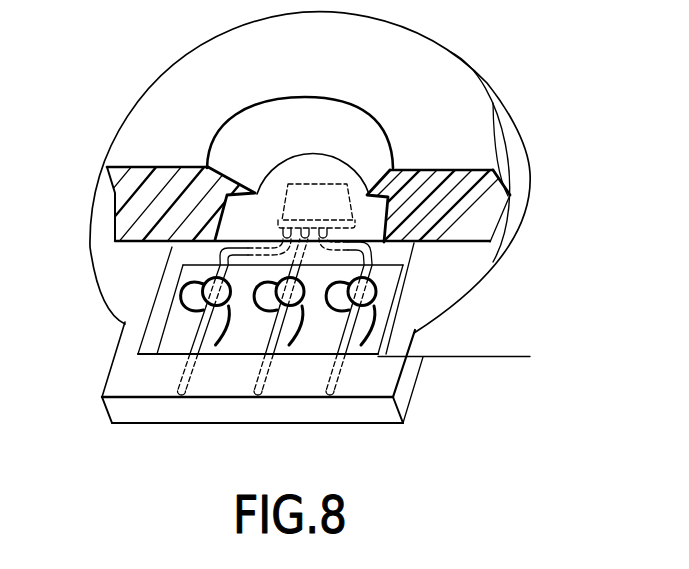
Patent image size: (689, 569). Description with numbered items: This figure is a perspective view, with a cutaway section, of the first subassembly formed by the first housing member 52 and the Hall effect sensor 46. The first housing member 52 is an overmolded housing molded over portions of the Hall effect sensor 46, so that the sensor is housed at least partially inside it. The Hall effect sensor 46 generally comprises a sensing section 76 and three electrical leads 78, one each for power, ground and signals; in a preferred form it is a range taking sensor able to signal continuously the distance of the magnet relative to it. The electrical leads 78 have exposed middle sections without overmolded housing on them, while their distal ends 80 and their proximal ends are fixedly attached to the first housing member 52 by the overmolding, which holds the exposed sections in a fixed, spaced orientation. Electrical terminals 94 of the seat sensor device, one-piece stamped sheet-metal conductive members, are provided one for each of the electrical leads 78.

The Hall effect sensor 46 is at (335, 184).
The first housing member 52 is at (513, 123).
The sensing section 76 is at (288, 183).
The electrical leads 78 is at (334, 356).
The distal ends 80 is at (177, 398).
The electrical terminals 94 is at (183, 296).